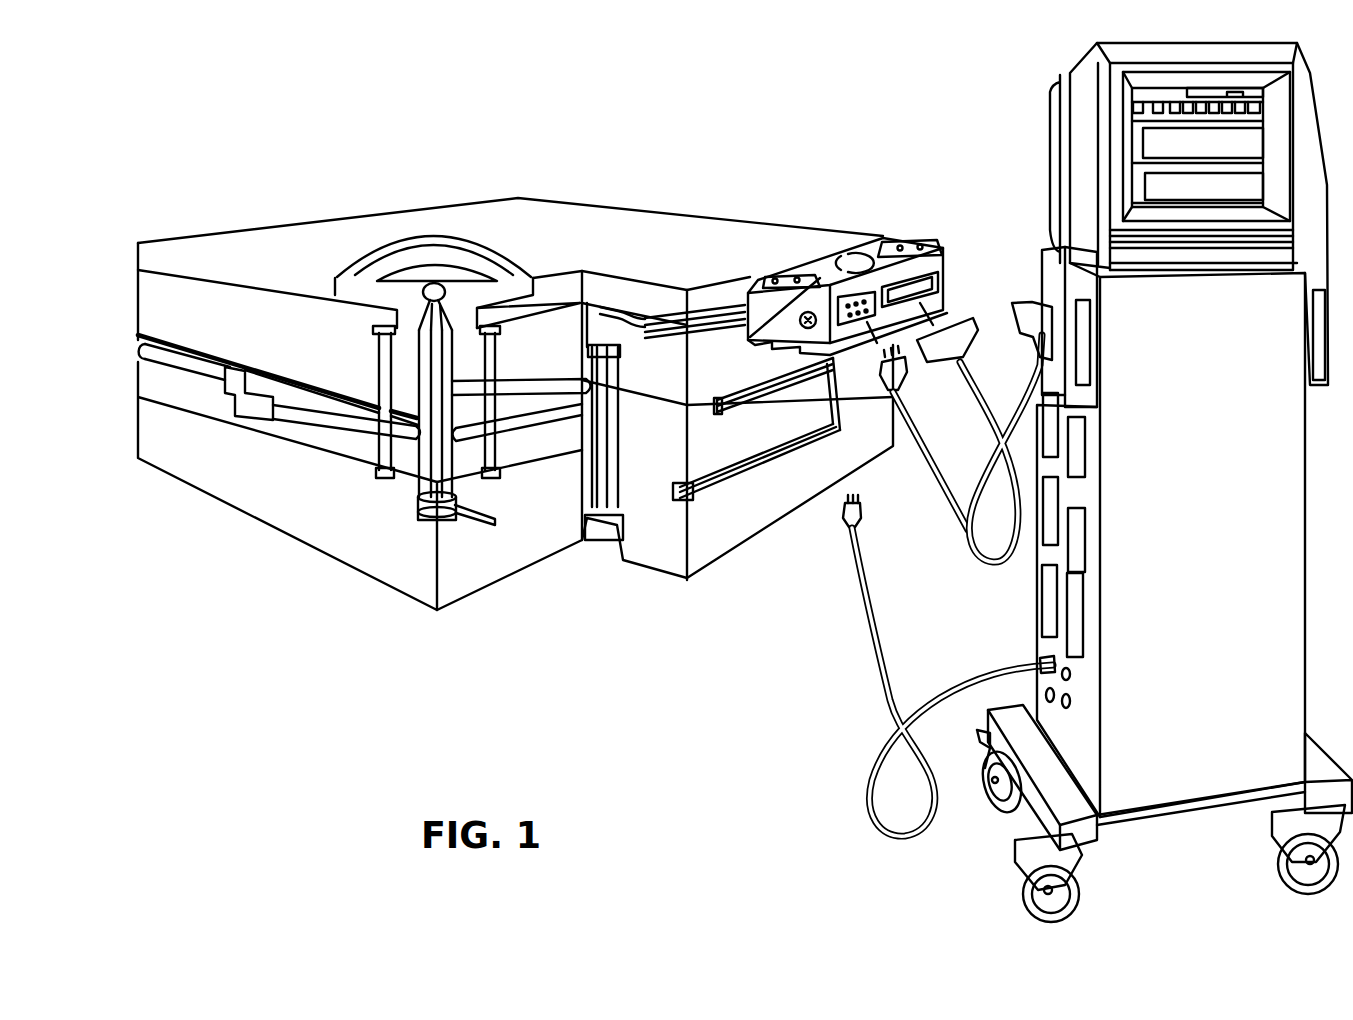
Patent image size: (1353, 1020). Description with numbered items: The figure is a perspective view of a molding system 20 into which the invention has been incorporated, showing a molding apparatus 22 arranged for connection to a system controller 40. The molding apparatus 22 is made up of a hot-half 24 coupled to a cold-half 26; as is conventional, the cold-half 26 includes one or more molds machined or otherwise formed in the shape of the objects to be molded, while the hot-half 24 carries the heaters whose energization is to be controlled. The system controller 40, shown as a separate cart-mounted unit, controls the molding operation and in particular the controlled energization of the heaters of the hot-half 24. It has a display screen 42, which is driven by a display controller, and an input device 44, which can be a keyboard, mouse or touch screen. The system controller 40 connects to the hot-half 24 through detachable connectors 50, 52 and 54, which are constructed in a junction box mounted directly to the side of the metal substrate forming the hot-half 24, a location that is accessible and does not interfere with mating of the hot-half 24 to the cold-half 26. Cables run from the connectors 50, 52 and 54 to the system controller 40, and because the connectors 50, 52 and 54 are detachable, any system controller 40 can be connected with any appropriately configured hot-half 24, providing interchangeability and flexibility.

The molding system 20 is at (618, 598).
The molding apparatus 22 is at (172, 395).
The hot-half 24 is at (845, 235).
The cold-half 26 is at (777, 510).
The system controller 40 is at (1035, 583).
The display screen 42 is at (1153, 148).
The input device 44 is at (1183, 142).
The detachable connector 50 is at (944, 292).
The detachable connector 52 is at (945, 262).
The detachable connector 54 is at (806, 312).